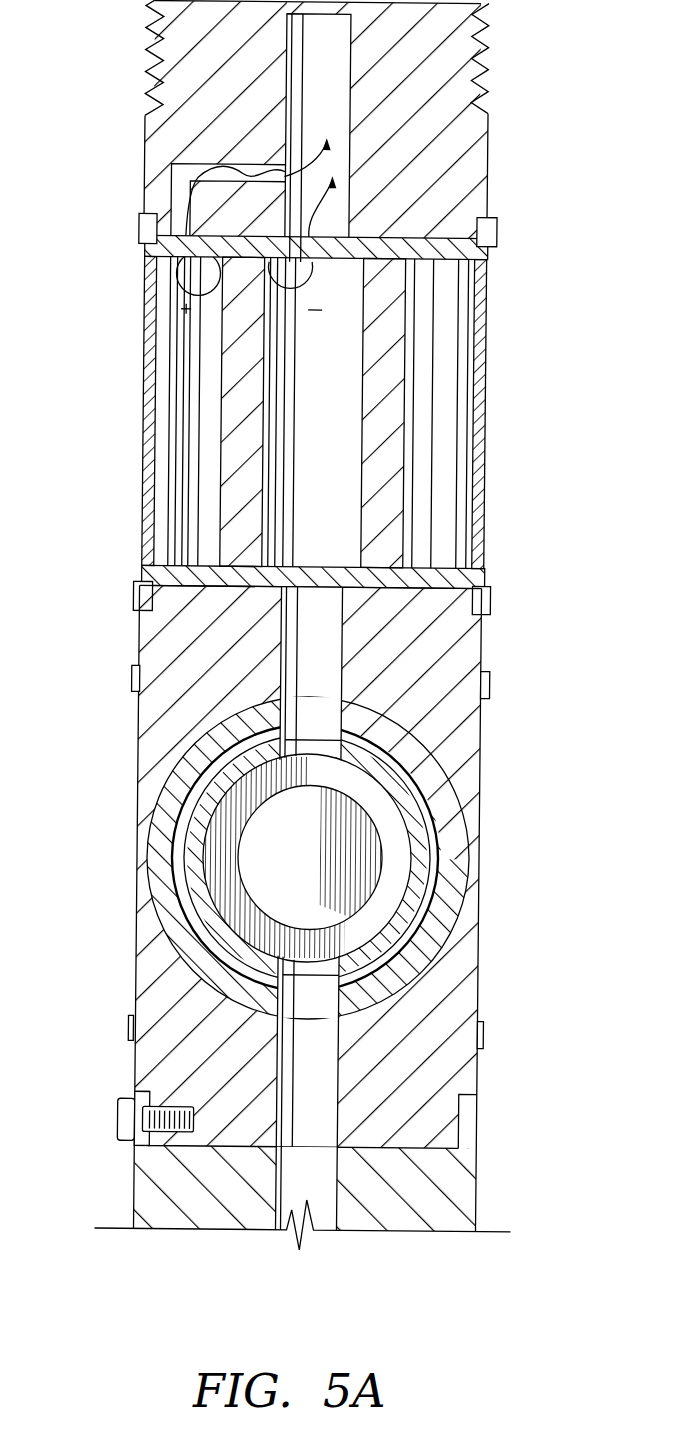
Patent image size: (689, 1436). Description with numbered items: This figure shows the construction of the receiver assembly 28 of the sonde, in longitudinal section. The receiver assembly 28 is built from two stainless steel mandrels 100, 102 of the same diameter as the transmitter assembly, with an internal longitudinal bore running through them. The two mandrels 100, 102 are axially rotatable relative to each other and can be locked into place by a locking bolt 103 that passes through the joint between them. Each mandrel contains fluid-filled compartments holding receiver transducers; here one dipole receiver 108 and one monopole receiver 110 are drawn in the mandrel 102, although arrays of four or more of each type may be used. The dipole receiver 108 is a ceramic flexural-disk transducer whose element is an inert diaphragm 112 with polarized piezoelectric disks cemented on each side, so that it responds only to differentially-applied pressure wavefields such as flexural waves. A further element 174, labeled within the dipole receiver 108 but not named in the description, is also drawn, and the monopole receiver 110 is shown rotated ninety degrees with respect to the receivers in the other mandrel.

The monopole receiver transducer 110 is at (503, 474).
The receiver assembly 28 is at (514, 678).
The mandrel 102 is at (137, 637).
The dipole receiver transducer 108 is at (470, 826).
The rotor 174 is at (262, 865).
The inert diaphragm 112 is at (218, 884).
The locking bolt 103 is at (130, 1100).
The mandrel 100 is at (480, 1202).